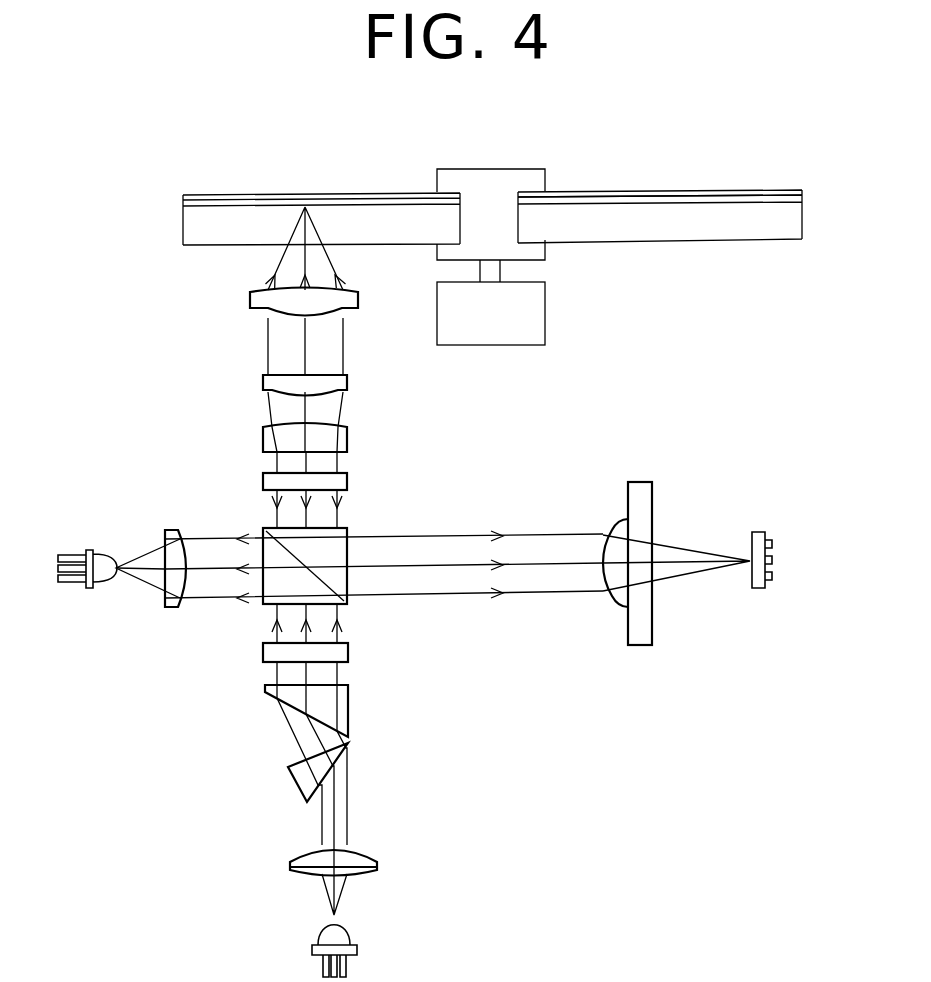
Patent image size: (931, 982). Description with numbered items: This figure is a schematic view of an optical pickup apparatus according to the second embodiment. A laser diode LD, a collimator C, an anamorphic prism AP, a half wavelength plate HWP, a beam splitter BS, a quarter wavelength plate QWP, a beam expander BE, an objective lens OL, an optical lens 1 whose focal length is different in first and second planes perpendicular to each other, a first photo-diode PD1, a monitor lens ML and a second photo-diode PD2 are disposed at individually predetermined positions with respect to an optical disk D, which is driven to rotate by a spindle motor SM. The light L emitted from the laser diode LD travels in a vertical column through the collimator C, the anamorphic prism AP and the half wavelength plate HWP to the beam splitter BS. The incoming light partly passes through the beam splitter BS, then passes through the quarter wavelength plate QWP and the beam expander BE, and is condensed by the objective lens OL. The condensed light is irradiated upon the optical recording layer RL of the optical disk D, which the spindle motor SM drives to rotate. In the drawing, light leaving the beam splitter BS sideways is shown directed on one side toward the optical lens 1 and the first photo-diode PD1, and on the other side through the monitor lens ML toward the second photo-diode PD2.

The optical disk D is at (790, 221).
The optical recording layer RL is at (668, 192).
The spindle motor SM is at (491, 257).
The light beam L is at (268, 340).
The objective lens OL is at (358, 298).
The beam expander BE is at (363, 375).
The quarter wavelength plate QWP is at (347, 483).
The beam splitter BS is at (345, 530).
The half wavelength plate HWP is at (348, 652).
The anamorphic prism AP is at (367, 682).
The collimator C is at (360, 860).
The laser diode LD is at (350, 935).
The second photo-diode PD2 is at (97, 588).
The monitor lens ML is at (168, 607).
The optical lens 1 is at (640, 645).
The first photo-diode PD1 is at (758, 588).